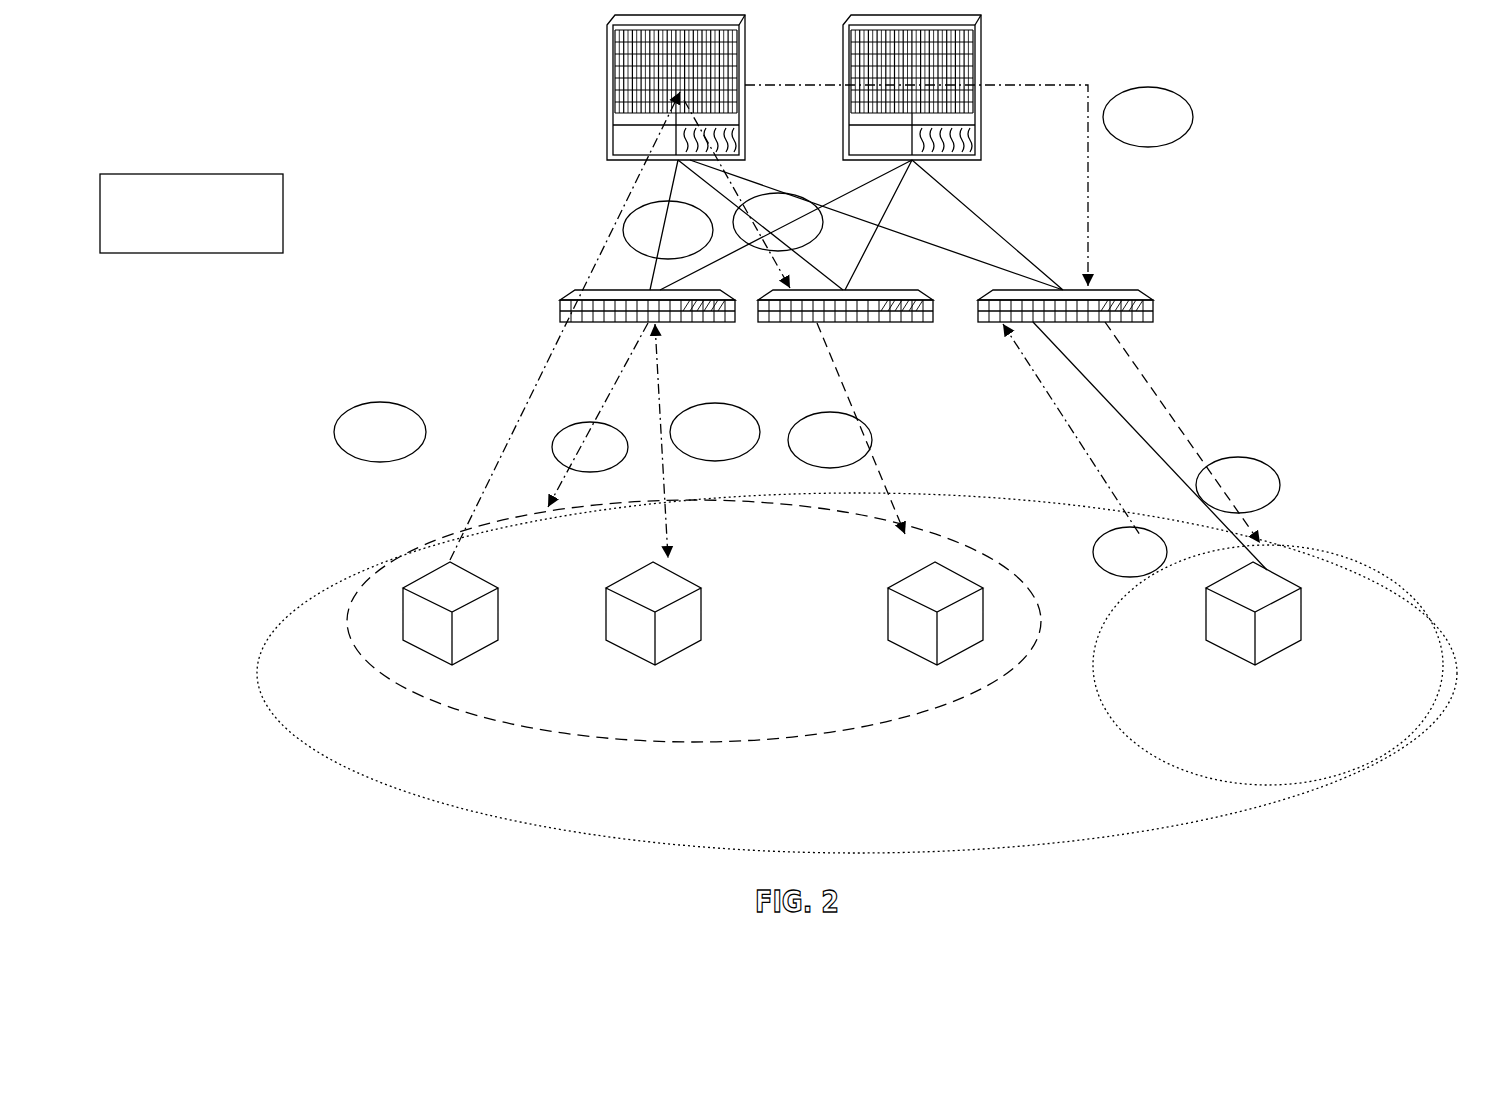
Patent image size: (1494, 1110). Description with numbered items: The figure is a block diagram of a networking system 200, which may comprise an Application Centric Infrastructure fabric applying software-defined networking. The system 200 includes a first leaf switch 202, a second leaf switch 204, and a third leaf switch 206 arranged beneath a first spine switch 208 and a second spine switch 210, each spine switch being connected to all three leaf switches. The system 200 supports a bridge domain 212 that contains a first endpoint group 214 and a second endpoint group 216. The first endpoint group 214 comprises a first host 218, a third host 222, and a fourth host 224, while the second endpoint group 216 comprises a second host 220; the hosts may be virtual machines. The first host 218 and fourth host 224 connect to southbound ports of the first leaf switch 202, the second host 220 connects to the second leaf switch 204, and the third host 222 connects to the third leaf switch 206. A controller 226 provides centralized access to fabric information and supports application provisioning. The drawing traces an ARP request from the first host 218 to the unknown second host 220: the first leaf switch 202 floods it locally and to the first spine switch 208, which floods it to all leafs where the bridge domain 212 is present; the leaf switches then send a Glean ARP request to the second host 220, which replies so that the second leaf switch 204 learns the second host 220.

The networking system 200 is at (228, 58).
The first leaf switch 202 is at (600, 290).
The second leaf switch 204 is at (1130, 290).
The third leaf switch 206 is at (806, 323).
The first spine switch 208 is at (607, 70).
The second spine switch 210 is at (843, 48).
The bridge domain 212 is at (257, 665).
The first endpoint group 214 is at (918, 713).
The second endpoint group 216 is at (1137, 740).
The first host 218 is at (480, 650).
The second host 220 is at (1278, 650).
The third host 222 is at (912, 650).
The fourth host 224 is at (685, 648).
The controller 226 is at (218, 174).